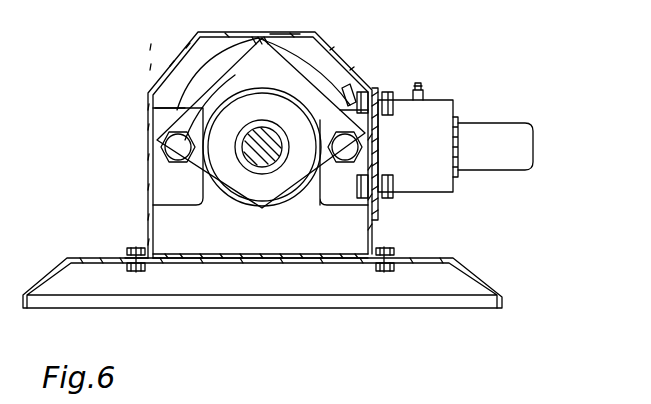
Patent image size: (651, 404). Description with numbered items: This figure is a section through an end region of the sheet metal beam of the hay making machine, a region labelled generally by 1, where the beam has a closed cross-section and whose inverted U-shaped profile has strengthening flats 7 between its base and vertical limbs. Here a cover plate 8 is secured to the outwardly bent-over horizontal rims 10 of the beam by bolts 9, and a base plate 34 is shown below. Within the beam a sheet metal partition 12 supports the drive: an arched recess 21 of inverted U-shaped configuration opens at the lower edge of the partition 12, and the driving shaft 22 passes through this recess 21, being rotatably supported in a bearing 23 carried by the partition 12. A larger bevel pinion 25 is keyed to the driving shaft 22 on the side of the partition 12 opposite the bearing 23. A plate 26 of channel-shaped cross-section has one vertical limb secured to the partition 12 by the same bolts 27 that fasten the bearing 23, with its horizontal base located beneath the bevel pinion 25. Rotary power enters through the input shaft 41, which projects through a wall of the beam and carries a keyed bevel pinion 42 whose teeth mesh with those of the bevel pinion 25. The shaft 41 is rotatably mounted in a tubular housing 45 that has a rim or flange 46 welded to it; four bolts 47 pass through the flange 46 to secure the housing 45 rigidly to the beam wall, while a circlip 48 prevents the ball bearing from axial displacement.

The mounting assembly 1 is at (282, 33).
The flats 7 is at (178, 57).
The cover plates 8 is at (318, 242).
The bolts 9 is at (137, 248).
The horizontal rims 10 is at (128, 260).
The partition 12 is at (258, 37).
The arched recess 21 is at (307, 205).
The driving shaft 22 is at (260, 140).
The bearing 23 is at (252, 190).
The bevel pinion 25 is at (214, 62).
The plate 26 is at (190, 240).
The bolts 27 is at (178, 155).
The base plate 34 is at (33, 290).
The input shaft 41 is at (523, 147).
The bevel pinion 42 is at (350, 87).
The tubular housing 45 is at (443, 190).
The rim or flange 46 is at (376, 158).
The bolts 47 is at (395, 112).
The circlip 48 is at (456, 118).